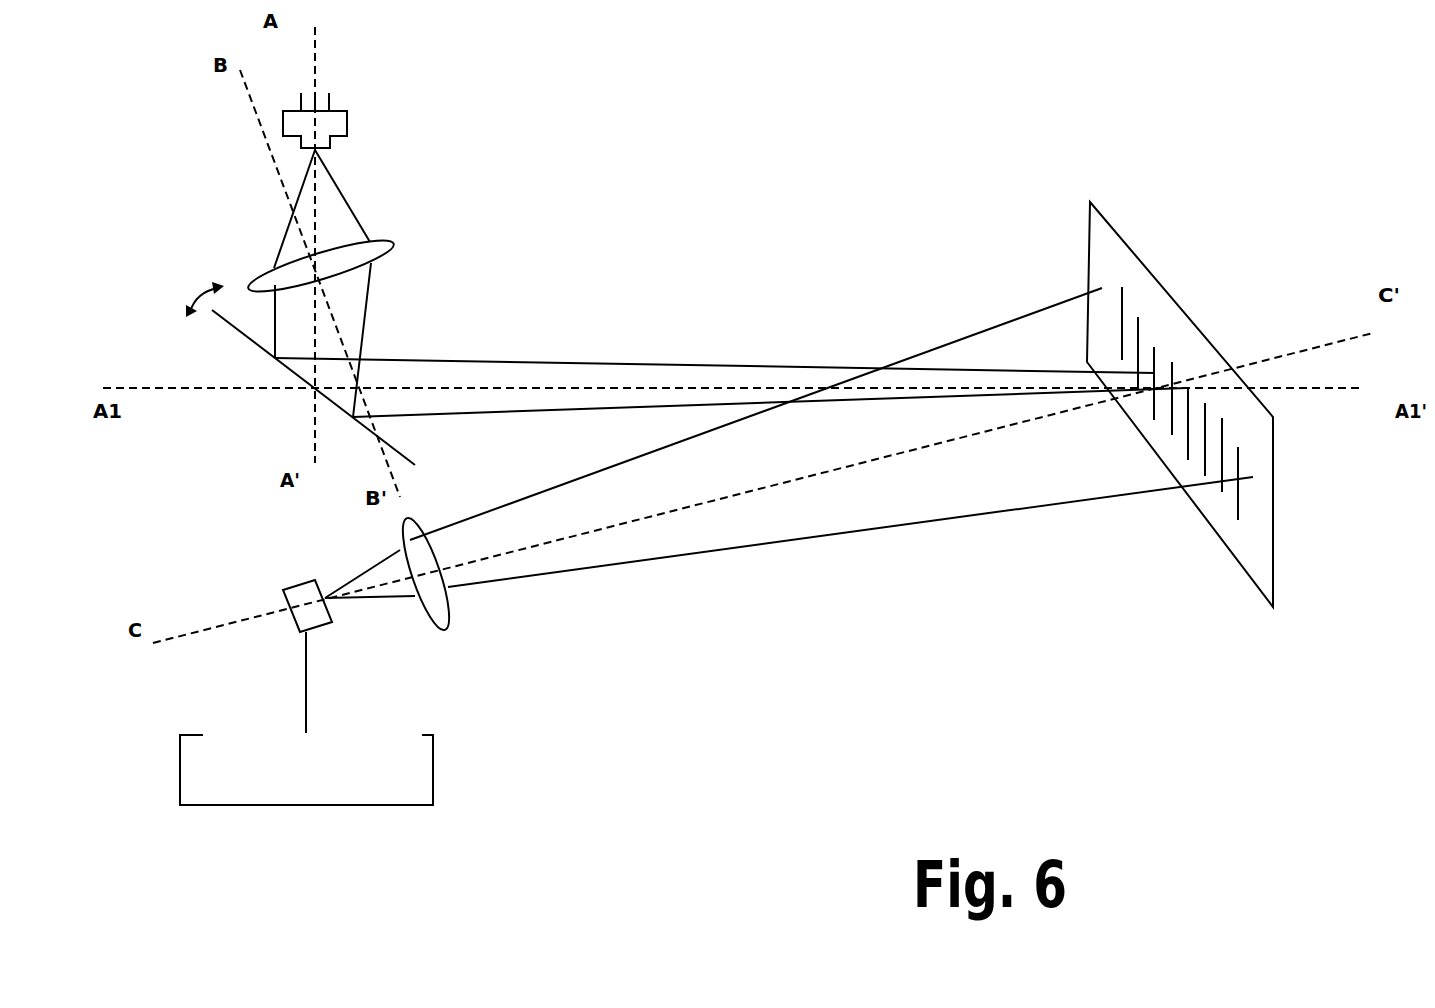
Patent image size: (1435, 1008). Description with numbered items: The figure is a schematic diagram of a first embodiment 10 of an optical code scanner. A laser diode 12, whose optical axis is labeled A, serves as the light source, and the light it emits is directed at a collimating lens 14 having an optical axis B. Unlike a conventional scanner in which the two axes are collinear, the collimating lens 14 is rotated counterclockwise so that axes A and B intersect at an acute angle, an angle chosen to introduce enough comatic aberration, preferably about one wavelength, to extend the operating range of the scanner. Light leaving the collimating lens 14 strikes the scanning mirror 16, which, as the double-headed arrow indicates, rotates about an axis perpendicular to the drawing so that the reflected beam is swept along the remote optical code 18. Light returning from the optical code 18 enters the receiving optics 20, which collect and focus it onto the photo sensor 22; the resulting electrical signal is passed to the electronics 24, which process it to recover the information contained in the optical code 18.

The first embodiment of an optical code scanner 10 is at (760, 86).
The laser diode 12 is at (385, 176).
The collimating lens 14 is at (396, 318).
The scanning mirror 16 is at (237, 369).
The optical code 18 is at (1090, 202).
The receiving optics 20 is at (823, 492).
The photo sensor 22 is at (339, 578).
The electronics 24 is at (306, 718).